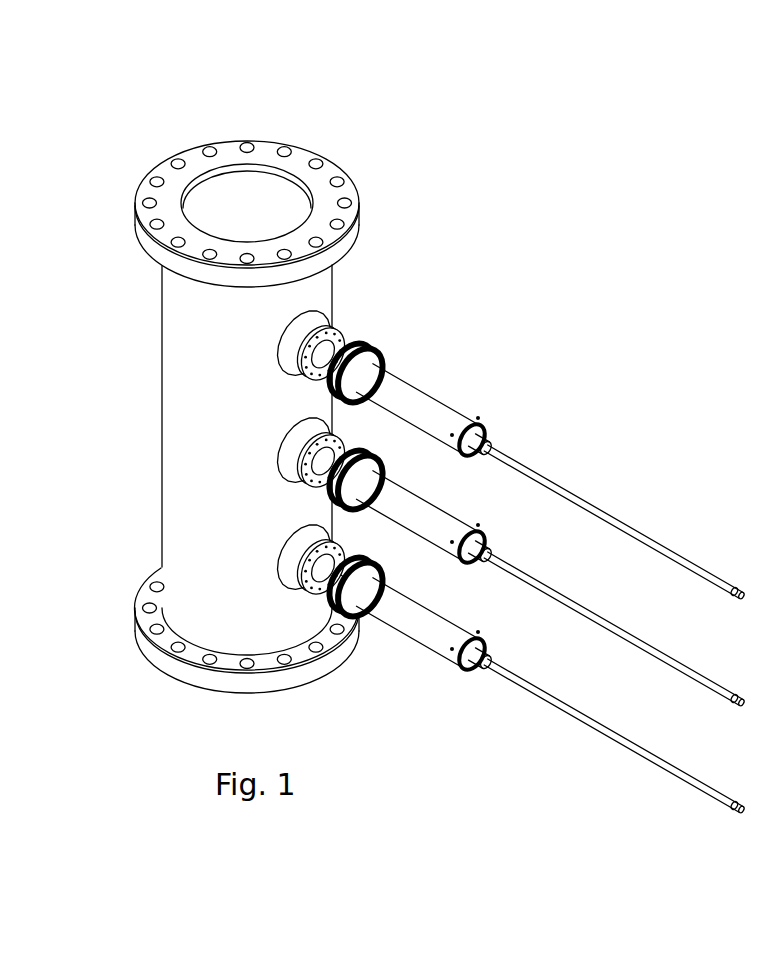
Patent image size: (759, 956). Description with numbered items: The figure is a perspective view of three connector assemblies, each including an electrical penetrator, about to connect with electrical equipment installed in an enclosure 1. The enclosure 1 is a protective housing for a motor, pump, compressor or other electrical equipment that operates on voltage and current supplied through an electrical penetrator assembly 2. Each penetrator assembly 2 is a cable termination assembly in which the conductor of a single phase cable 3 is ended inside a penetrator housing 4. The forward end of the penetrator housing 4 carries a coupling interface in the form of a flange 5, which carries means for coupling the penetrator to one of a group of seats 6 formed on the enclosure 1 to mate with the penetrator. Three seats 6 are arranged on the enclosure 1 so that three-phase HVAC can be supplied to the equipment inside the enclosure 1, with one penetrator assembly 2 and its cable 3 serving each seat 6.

The enclosure 1 is at (356, 150).
The electrical penetrator assembly 2 is at (532, 440).
The single phase cable 3 is at (546, 478).
The penetrator housing 4 is at (455, 412).
The flange 5 is at (379, 346).
The seat 6 is at (335, 324).